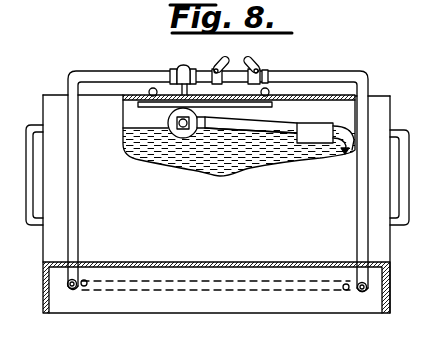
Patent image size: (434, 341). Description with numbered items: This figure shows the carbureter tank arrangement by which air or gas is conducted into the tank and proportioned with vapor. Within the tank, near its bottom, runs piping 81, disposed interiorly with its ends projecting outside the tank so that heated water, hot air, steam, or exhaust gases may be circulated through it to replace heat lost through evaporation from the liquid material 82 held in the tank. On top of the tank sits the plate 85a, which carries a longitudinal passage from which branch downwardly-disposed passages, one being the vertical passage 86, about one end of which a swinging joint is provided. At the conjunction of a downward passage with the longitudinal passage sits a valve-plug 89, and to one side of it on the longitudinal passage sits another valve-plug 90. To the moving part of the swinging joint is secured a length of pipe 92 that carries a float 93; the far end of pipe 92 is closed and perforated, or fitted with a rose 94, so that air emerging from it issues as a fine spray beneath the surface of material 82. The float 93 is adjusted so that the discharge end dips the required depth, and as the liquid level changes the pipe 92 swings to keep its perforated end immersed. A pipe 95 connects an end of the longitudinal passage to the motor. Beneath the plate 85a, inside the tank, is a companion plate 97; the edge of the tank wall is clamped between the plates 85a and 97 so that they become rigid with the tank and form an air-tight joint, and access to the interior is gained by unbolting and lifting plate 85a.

The piping 81 is at (217, 205).
The material 82 is at (247, 153).
The plate 85a is at (166, 95).
The vertical passage 86 is at (176, 84).
The valve-plug 89 is at (220, 66).
The valve-plug 90 is at (262, 69).
The pipe 92 is at (291, 123).
The float 93 is at (315, 133).
The rose 94 is at (345, 155).
The pipe 95 is at (218, 174).
The companion plate 97 is at (232, 122).